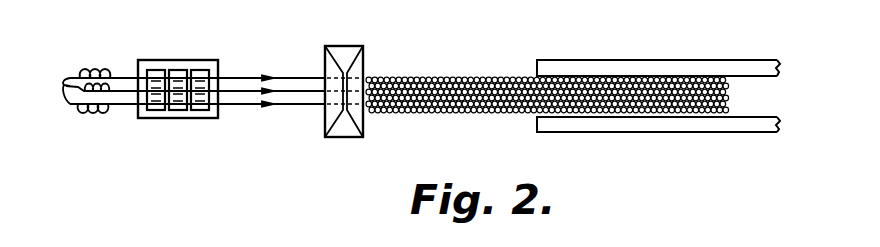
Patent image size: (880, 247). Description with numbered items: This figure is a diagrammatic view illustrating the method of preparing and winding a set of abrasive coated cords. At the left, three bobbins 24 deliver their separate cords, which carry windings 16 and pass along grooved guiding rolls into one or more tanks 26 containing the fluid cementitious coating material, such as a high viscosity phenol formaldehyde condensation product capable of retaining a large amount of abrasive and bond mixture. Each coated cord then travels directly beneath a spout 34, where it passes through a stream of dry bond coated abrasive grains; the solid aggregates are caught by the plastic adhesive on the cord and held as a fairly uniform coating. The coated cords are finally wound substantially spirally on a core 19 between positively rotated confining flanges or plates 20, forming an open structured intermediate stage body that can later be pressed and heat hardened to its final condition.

The bobbins 24 is at (55, 90).
The coil windings 16 is at (123, 116).
The tanks 26 is at (192, 115).
The spout 34 is at (345, 47).
The core 19 is at (727, 109).
The confining flanges or plates 20 is at (632, 123).